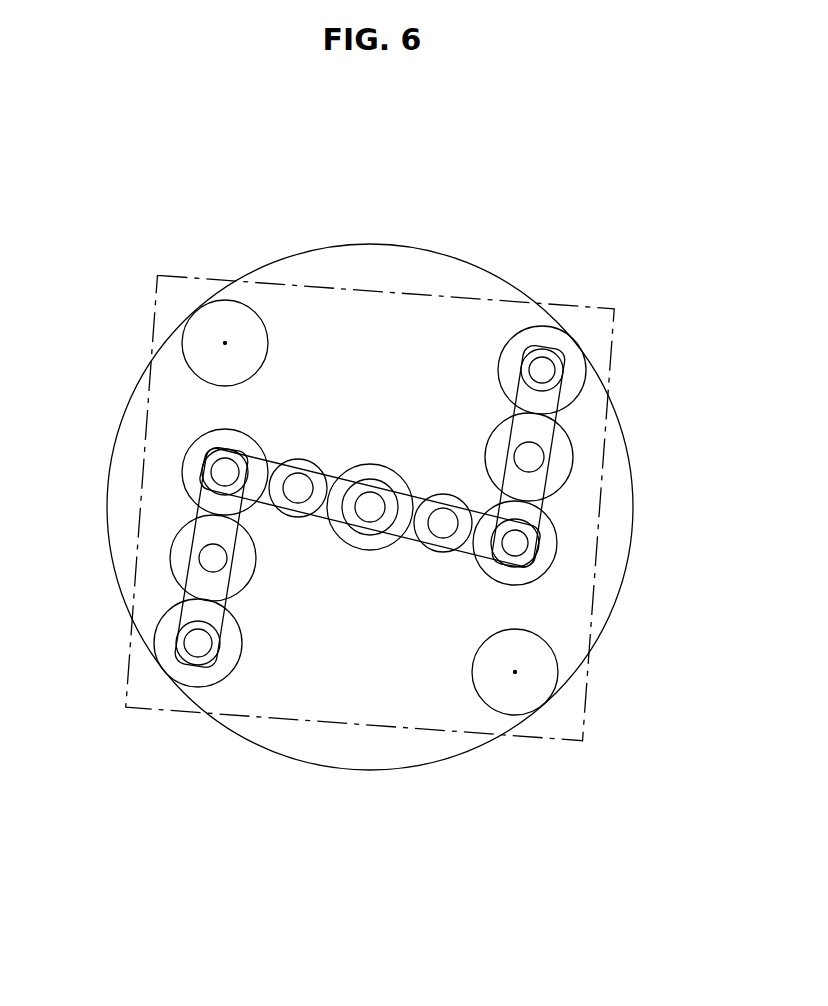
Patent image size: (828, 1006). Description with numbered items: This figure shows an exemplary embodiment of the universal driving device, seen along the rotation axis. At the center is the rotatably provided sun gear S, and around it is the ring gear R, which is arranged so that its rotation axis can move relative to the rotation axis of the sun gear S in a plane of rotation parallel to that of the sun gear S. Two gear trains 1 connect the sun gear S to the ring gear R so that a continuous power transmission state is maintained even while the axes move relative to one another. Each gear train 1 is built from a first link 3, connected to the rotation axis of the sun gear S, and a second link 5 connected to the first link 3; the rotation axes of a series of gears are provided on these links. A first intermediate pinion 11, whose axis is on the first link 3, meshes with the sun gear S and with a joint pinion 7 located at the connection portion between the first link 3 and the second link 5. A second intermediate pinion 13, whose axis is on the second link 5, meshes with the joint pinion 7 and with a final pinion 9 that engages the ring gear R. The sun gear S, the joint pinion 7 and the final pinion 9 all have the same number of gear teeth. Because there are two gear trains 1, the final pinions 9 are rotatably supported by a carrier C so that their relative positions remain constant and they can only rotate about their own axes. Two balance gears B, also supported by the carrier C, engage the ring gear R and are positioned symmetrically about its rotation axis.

The gear train 1 is at (176, 467).
The first link 3 is at (317, 513).
The second link 5 is at (556, 420).
The joint pinion 7 is at (190, 457).
The final pinion 9 is at (553, 338).
The first intermediate pinion 11 is at (307, 460).
The second intermediate pinion 13 is at (567, 472).
The sun gear S is at (378, 472).
The carrier C is at (450, 255).
The ring gear R is at (152, 360).
The balance gear B is at (207, 323).